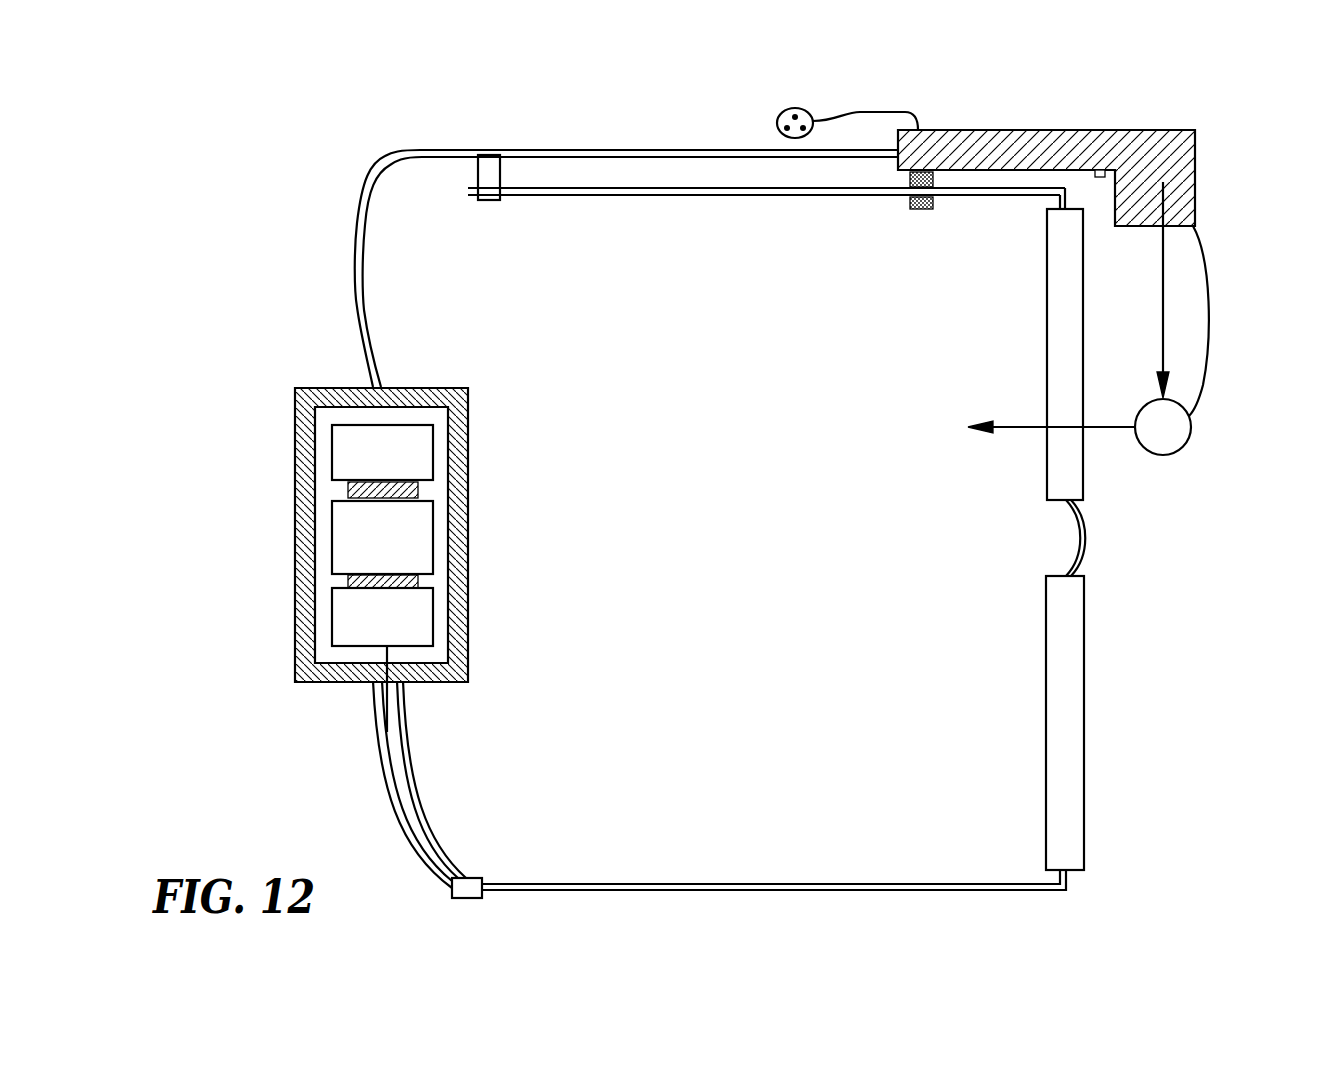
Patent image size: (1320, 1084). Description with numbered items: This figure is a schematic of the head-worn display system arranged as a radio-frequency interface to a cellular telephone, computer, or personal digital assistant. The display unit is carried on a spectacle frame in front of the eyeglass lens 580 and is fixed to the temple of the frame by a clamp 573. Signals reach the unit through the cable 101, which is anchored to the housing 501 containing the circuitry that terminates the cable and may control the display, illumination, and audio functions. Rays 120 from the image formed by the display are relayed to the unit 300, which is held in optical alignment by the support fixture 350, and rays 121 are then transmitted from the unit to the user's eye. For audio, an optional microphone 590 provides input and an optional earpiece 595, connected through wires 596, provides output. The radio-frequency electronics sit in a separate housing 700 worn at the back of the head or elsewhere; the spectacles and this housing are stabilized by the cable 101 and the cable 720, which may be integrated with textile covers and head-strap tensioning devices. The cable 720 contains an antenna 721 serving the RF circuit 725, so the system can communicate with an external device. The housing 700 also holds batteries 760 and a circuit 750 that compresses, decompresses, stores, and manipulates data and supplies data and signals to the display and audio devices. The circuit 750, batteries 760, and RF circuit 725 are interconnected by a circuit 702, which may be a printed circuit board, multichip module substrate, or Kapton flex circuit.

The cable 101 is at (488, 152).
The circuit 750 is at (490, 200).
The earpiece 595 is at (777, 124).
The wires 596 is at (857, 110).
The housing 501 is at (950, 130).
The clamp 573 is at (912, 210).
The microphone 590 is at (1097, 175).
The eyeglass lens 580 is at (1058, 472).
The rays 120 is at (1163, 315).
The support fixture 350 is at (1209, 302).
The unit 300 is at (1178, 447).
The rays 121 is at (1017, 427).
The housing 700 is at (462, 600).
The batteries 760 is at (420, 533).
The circuit 702 is at (411, 586).
The RF circuit 725 is at (410, 607).
The antenna 721 is at (387, 717).
The cable 720 is at (421, 790).